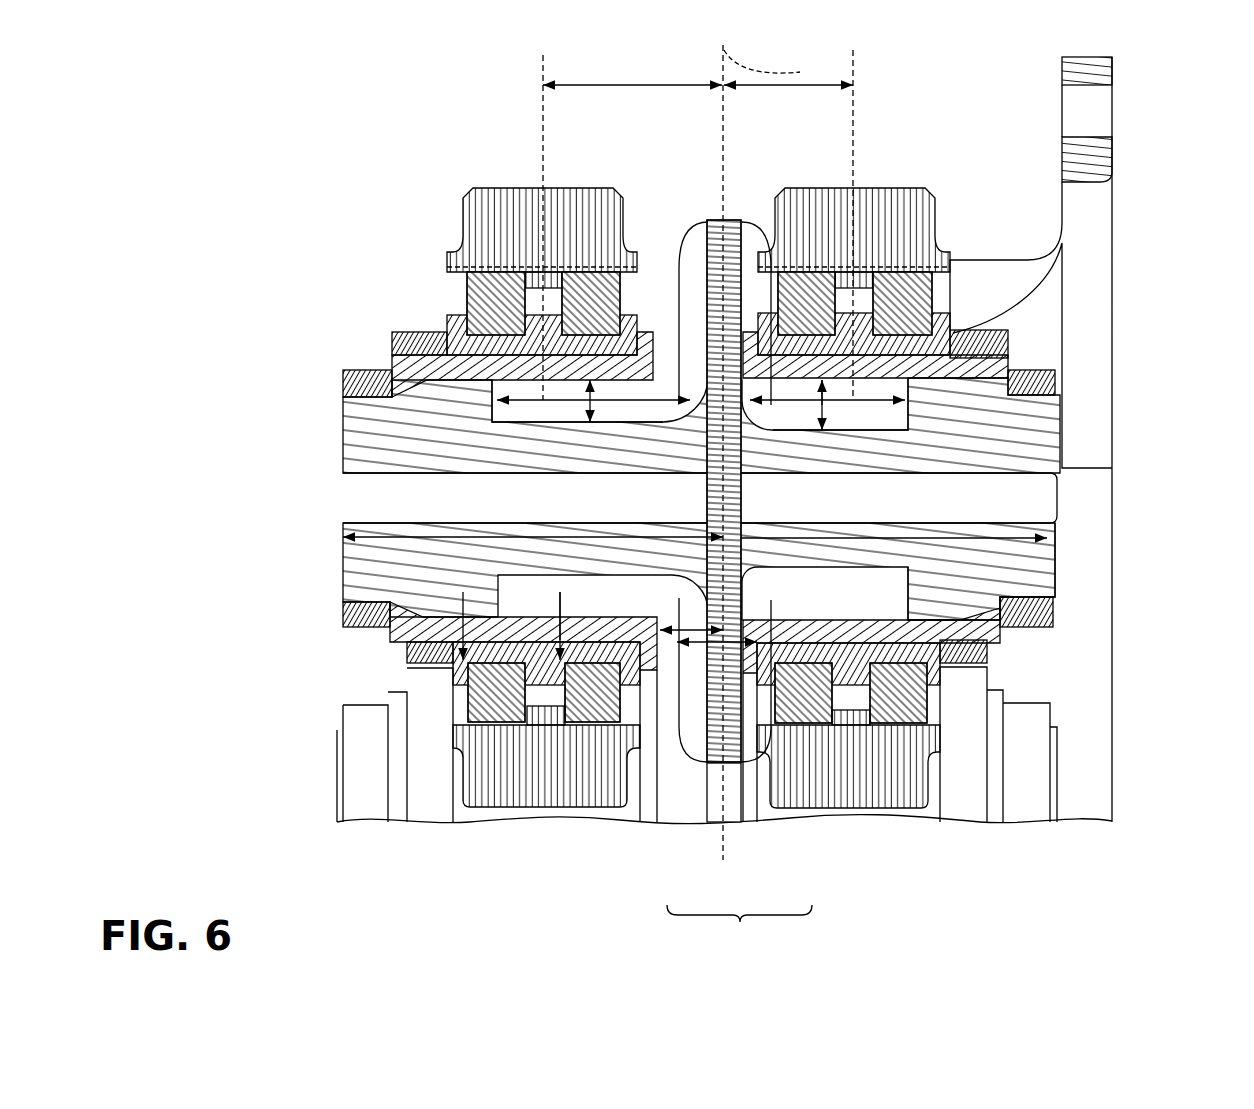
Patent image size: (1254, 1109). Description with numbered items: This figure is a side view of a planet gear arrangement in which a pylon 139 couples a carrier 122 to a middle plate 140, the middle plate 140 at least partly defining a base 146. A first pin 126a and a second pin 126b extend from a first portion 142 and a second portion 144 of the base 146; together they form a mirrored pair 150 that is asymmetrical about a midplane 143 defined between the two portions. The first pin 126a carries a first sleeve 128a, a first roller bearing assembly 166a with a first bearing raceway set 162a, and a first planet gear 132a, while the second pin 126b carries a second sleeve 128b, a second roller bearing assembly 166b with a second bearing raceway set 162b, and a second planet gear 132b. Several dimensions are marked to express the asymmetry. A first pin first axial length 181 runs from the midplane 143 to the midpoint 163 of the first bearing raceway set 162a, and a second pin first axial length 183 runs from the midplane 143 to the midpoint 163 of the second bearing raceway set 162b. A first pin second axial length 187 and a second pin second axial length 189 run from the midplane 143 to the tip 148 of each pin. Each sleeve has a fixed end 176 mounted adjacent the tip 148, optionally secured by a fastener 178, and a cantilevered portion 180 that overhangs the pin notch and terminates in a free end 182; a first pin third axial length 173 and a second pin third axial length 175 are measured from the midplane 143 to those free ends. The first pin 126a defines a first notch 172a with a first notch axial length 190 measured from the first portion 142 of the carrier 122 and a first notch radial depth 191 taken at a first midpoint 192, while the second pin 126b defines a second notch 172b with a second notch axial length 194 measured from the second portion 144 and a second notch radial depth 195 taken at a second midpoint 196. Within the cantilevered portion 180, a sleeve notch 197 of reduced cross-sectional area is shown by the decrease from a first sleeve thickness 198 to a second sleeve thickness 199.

The carrier 122 is at (1117, 147).
The first pin 126a is at (585, 580).
The second pin 126b is at (797, 580).
The first sleeve 128a is at (390, 360).
The second sleeve 128b is at (1020, 357).
The first planet gear 132a is at (335, 583).
The second planet gear 132b is at (1047, 636).
The pylon 139 is at (760, 240).
The middle plate 140 is at (713, 212).
The first portion 142 is at (681, 268).
The midplane 143 is at (764, 51).
The second portion 144 is at (750, 335).
The base 146 is at (735, 767).
The tip 148 is at (340, 425).
The mirrored pair 150 is at (739, 926).
The first bearing raceway set 162a is at (574, 246).
The second bearing raceway set 162b is at (1037, 255).
The midpoint 163 is at (560, 395).
The first roller bearing assembly 166a is at (477, 745).
The second roller bearing assembly 166b is at (987, 745).
The first notch 172a is at (530, 423).
The second notch 172b is at (858, 440).
The first pin third axial length 173 is at (686, 595).
The second pin third axial length 175 is at (690, 600).
The fixed end 176 is at (388, 363).
The fastener 178 is at (343, 383).
The cantilevered portion 180 is at (381, 351).
The first pin first axial length 181 is at (598, 85).
The free end 182 is at (690, 398).
The second pin first axial length 183 is at (802, 80).
The first pin second axial length 187 is at (480, 535).
The second pin second axial length 189 is at (1000, 537).
The first notch axial length 190 is at (437, 314).
The first notch radial depth 191 is at (655, 375).
The first midpoint 192 is at (480, 340).
The second notch axial length 194 is at (910, 400).
The second notch radial depth 195 is at (883, 400).
The second midpoint 196 is at (850, 400).
The sleeve notch 197 is at (618, 645).
The first sleeve thickness 198 is at (405, 643).
The second sleeve thickness 199 is at (560, 640).